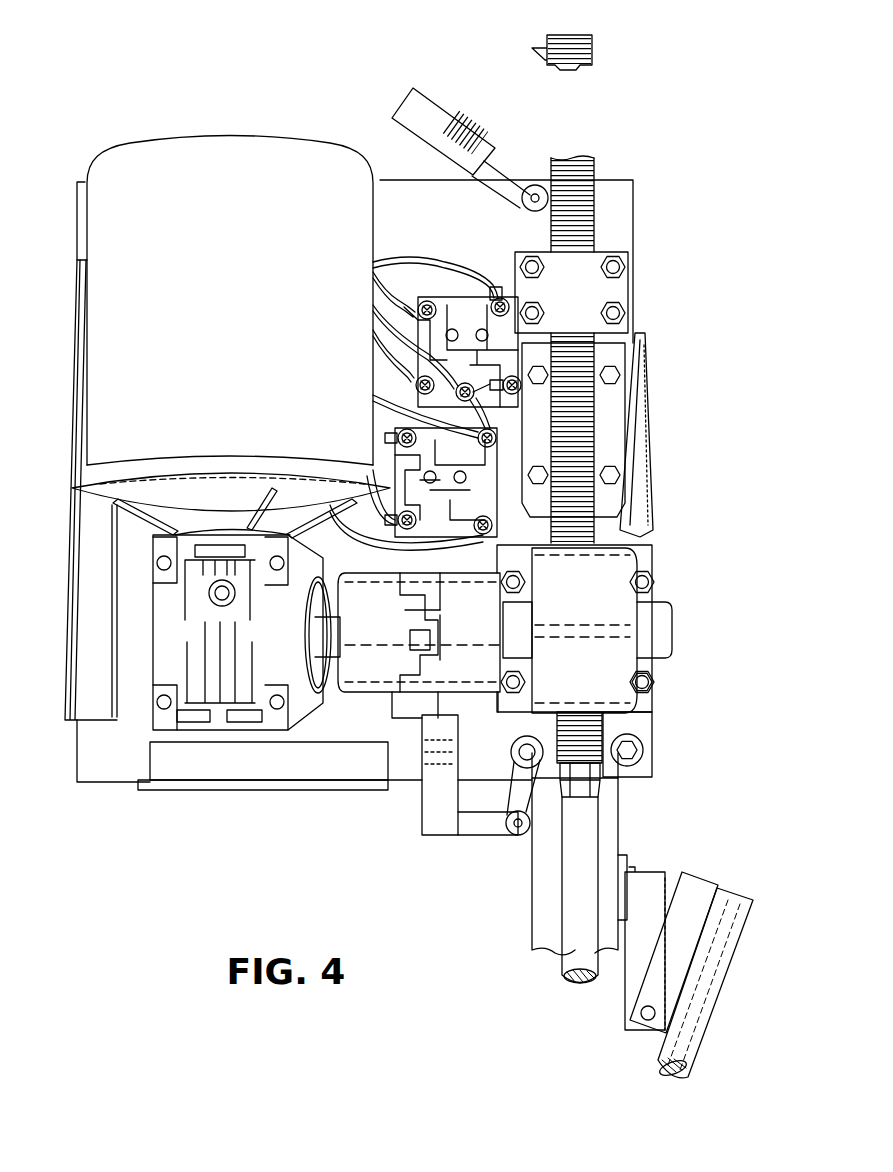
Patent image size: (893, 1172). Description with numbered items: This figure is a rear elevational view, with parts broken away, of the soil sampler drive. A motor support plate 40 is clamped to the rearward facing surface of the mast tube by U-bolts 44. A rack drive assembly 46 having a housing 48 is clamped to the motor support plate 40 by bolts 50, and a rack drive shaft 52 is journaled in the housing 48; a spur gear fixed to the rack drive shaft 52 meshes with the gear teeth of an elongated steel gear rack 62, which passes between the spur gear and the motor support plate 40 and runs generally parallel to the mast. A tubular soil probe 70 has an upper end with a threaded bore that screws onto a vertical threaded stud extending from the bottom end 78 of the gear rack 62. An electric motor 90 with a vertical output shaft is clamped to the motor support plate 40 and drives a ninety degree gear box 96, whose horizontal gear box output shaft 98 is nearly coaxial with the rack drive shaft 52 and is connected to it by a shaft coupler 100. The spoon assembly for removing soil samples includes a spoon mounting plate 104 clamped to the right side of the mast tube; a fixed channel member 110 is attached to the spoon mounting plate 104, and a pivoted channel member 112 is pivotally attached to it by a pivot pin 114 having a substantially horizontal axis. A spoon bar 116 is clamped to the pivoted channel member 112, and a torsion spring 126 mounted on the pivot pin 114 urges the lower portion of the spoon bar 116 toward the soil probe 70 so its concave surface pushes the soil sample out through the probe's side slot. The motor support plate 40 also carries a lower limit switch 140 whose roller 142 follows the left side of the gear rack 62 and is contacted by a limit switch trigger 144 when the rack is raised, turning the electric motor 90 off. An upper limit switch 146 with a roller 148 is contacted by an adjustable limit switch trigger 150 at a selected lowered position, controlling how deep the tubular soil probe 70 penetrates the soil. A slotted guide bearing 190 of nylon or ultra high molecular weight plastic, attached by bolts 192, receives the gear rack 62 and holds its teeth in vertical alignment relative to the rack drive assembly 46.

The motor support plate 40 is at (625, 213).
The U-bolts 44 is at (622, 265).
The rack drive assembly 46 is at (748, 661).
The housing 48 is at (625, 568).
The bolts 50 is at (648, 685).
The rack drive shaft 52 is at (670, 628).
The gear rack 62 is at (575, 160).
The tubular soil probe 70 is at (570, 968).
The bottom end 78 is at (617, 765).
The electric motor 90 is at (165, 152).
The ninety degree gear box 96 is at (165, 635).
The gear box output shaft 98 is at (333, 692).
The shaft coupler 100 is at (372, 692).
The spoon mounting plate 104 is at (714, 836).
The fixed channel member 110 is at (648, 880).
The pivoted channel member 112 is at (702, 890).
The pivot pin 114 is at (641, 1010).
The spoon bar 116 is at (615, 1057).
The torsion spring 126 is at (718, 880).
The lower limit switch 140 is at (435, 810).
The roller 142 is at (520, 745).
The limit switch trigger 144 is at (553, 845).
The upper limit switch 146 is at (405, 108).
The roller 148 is at (538, 182).
The limit switch trigger 150 is at (548, 48).
The guide bearing 190 is at (614, 418).
The bolts 192 is at (613, 472).